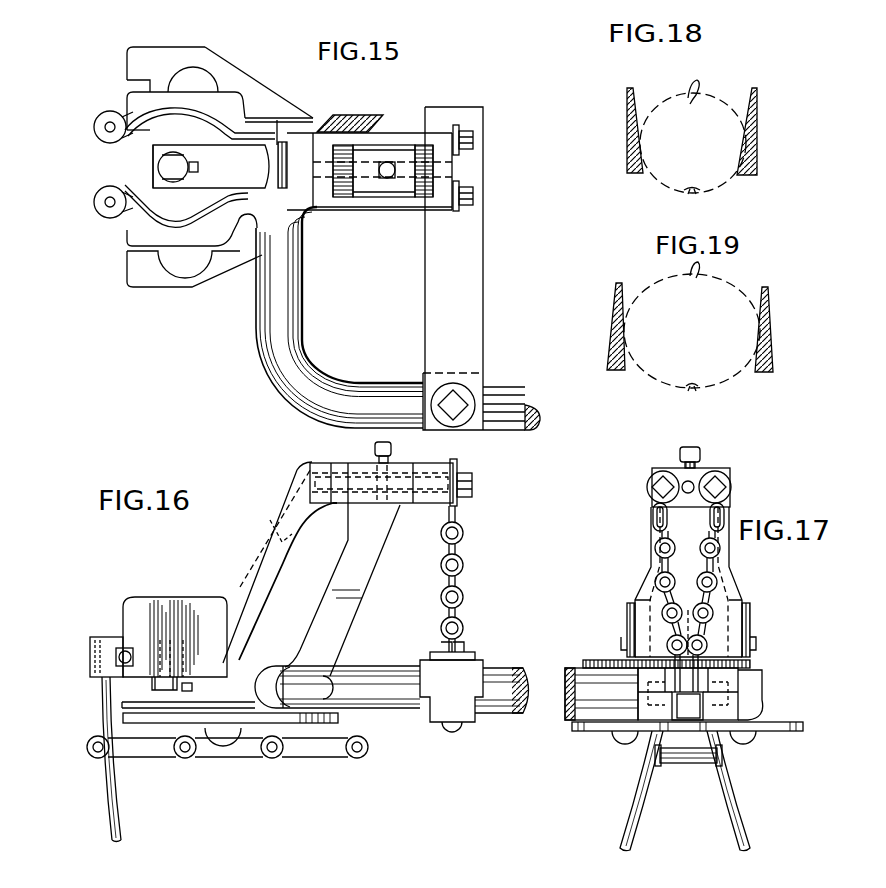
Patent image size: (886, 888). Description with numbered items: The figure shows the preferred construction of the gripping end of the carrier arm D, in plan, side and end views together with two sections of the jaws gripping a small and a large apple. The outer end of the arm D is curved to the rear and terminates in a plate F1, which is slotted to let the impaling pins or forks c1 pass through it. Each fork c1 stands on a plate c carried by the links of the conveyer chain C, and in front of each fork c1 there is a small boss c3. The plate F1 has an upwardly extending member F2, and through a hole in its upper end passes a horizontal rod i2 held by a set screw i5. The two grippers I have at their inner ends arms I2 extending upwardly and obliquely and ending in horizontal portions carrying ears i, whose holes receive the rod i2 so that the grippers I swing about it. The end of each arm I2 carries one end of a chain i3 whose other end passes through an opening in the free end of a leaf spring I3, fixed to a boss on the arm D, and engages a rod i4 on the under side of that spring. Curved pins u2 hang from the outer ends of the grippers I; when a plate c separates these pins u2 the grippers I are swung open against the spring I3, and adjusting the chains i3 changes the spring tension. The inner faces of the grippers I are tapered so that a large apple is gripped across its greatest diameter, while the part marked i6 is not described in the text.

In FIG. 15, the gripper I is at (155, 110).
In FIG. 18, the gripper I is at (627, 145).
In FIG. 19, the gripper I is at (616, 297).
In FIG. 16, the gripper I is at (172, 597).
In FIG. 17, the gripper I is at (627, 610).
In FIG. 15, the arm I2 is at (253, 133).
In FIG. 16, the arm I2 is at (273, 518).
In FIG. 17, the arm I2 is at (651, 528).
In FIG. 15, the leaf spring I3 is at (453, 268).
In FIG. 16, the leaf spring I3 is at (475, 657).
In FIG. 17, the leaf spring I3 is at (602, 660).
In FIG. 15, the pin u2 is at (100, 117).
In FIG. 16, the pin u2 is at (102, 697).
In FIG. 17, the pin u2 is at (643, 803).
In FIG. 15, the plate c is at (175, 278).
In FIG. 16, the plate c is at (333, 720).
In FIG. 17, the plate c is at (597, 732).
In FIG. 15, the impaling pin or fork c1 is at (157, 167).
In FIG. 16, the impaling pin or fork c1 is at (180, 642).
In FIG. 17, the impaling pin or fork c1 is at (704, 694).
In FIG. 15, the boss c3 is at (198, 167).
In FIG. 16, the boss c3 is at (192, 690).
In FIG. 16, the conveyer chain C is at (292, 758).
In FIG. 17, the conveyer chain C is at (674, 765).
In FIG. 15, the carrier arm D is at (340, 375).
In FIG. 16, the carrier arm D is at (481, 715).
In FIG. 17, the carrier arm D is at (585, 668).
In FIG. 15, the plate F1 is at (228, 108).
In FIG. 16, the plate F1 is at (336, 676).
In FIG. 17, the plate F1 is at (762, 710).
In FIG. 15, the upwardly extending member F2 is at (320, 118).
In FIG. 16, the upwardly extending member F2 is at (352, 615).
In FIG. 17, the upwardly extending member F2 is at (728, 630).
In FIG. 15, the ear i is at (345, 148).
In FIG. 16, the ear i is at (317, 463).
In FIG. 17, the ear i is at (677, 467).
In FIG. 15, the rod i2 is at (400, 182).
In FIG. 16, the rod i2 is at (377, 492).
In FIG. 17, the rod i2 is at (689, 494).
In FIG. 15, the chain i3 is at (456, 128).
In FIG. 16, the chain i3 is at (464, 563).
In FIG. 17, the chain i3 is at (655, 549).
In FIG. 17, the rod i4 is at (738, 680).
In FIG. 15, the set screw i5 is at (390, 165).
In FIG. 16, the set screw i5 is at (392, 448).
In FIG. 17, the set screw i5 is at (692, 447).
In FIG. 15, the slot bar i6 is at (284, 145).
In FIG. 16, the slot bar i6 is at (282, 540).